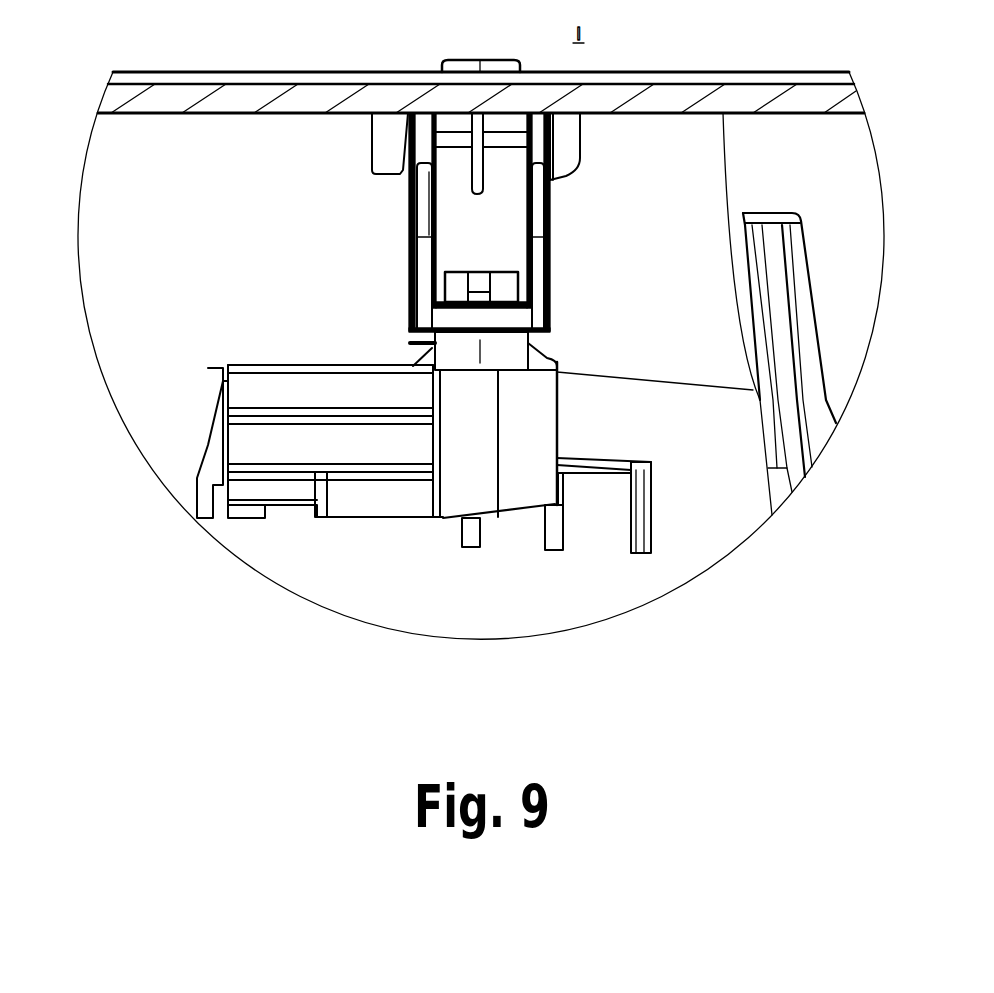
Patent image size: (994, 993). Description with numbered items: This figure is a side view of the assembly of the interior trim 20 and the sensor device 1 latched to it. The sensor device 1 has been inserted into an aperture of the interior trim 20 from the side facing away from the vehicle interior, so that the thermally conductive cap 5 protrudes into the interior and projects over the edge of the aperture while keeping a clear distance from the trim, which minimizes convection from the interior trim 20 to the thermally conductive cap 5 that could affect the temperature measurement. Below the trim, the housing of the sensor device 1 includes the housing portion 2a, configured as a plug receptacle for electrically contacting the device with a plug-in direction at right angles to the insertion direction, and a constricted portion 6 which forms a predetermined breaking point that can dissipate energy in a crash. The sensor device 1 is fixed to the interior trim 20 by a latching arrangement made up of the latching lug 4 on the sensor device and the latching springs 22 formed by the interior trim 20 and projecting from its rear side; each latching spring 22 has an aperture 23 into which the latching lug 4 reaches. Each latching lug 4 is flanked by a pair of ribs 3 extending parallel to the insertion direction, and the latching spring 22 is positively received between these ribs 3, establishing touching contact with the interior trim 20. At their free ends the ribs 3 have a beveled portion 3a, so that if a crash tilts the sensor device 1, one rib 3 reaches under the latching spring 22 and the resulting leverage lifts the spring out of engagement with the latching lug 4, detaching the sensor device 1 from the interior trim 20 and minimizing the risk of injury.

The sensor device 1 is at (390, 292).
The housing portion 2a is at (357, 508).
The ribs 3 is at (410, 197).
The beveled portion 3a is at (409, 278).
The latching lug 4 is at (470, 289).
The thermally conductive cap 5 is at (455, 60).
The constricted portion 6 is at (413, 343).
The interior trim 20 is at (633, 98).
The latching springs 22 is at (452, 173).
The apertures 23 is at (507, 272).